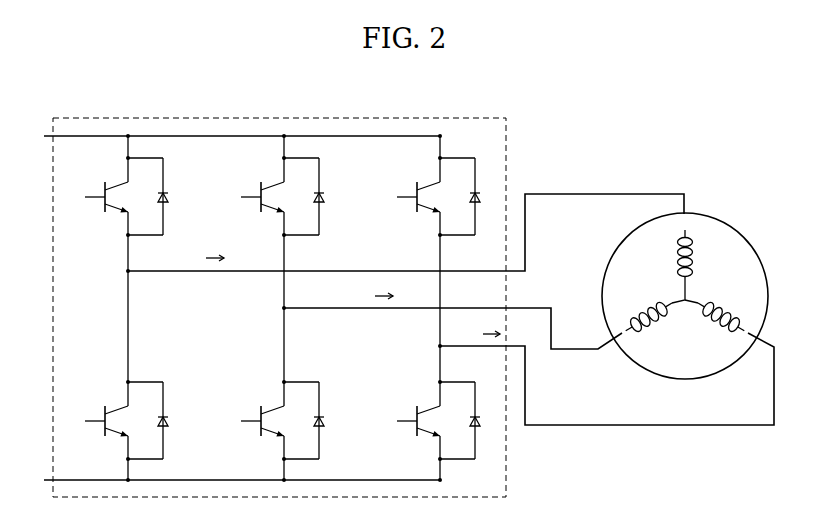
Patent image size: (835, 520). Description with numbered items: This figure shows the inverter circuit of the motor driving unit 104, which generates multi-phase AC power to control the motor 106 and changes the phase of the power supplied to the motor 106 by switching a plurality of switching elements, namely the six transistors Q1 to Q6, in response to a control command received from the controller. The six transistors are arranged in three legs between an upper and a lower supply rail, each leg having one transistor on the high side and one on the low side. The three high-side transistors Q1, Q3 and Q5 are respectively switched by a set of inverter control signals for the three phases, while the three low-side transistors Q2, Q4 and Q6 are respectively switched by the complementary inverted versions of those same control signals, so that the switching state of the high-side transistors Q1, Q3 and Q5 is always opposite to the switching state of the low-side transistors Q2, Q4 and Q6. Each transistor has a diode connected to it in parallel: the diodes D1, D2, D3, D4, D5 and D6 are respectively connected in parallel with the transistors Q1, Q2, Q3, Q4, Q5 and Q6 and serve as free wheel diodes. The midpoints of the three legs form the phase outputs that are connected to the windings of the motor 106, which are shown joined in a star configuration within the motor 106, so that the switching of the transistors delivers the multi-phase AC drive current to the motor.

The motor driving unit 104 is at (378, 116).
The motor 106 is at (731, 230).
The high-side transistor Q1 is at (117, 196).
The low-side transistor Q2 is at (429, 420).
The high-side transistor Q3 is at (273, 196).
The low-side transistor Q4 is at (117, 420).
The high-side transistor Q5 is at (429, 196).
The low-side transistor Q6 is at (273, 420).
The free wheel diode D1 is at (158, 196).
The free wheel diode D2 is at (471, 420).
The free wheel diode D3 is at (314, 196).
The free wheel diode D4 is at (158, 420).
The free wheel diode D5 is at (470, 196).
The free wheel diode D6 is at (315, 420).